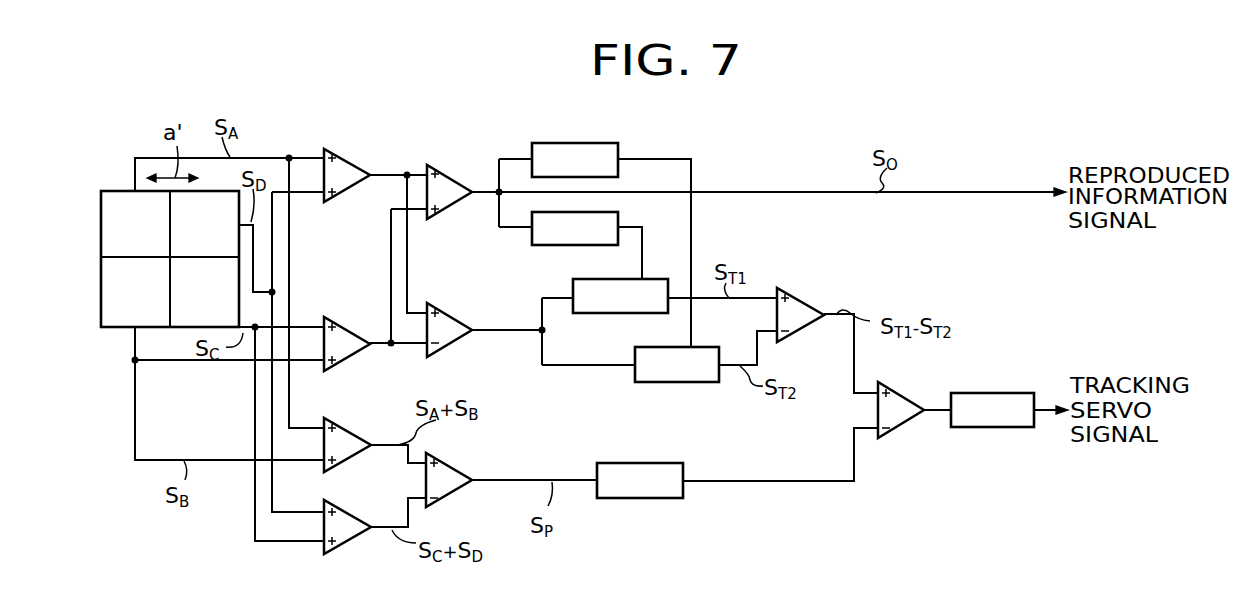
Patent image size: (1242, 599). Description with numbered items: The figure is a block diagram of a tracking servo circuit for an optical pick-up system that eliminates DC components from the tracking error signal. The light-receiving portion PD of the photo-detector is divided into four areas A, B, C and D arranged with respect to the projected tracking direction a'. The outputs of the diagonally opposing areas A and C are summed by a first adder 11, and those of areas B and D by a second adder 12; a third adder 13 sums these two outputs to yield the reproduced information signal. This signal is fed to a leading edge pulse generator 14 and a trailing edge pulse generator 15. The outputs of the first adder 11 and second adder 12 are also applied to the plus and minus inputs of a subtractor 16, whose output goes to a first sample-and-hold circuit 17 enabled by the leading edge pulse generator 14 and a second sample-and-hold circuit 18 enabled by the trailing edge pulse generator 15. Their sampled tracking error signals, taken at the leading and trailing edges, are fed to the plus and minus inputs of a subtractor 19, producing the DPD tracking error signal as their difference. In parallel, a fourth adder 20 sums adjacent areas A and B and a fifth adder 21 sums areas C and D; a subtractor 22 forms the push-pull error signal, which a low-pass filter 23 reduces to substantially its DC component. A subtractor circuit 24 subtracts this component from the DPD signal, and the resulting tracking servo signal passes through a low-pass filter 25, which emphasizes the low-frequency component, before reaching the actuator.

The light-receiving portion PD is at (122, 189).
The first adder 11 is at (355, 165).
The second adder 12 is at (353, 333).
The third adder 13 is at (448, 176).
The leading edge pulse generator 14 is at (618, 217).
The trailing edge pulse generator 15 is at (619, 150).
The subtractor 16 is at (450, 316).
The first sample-and-hold circuit 17 is at (653, 278).
The second sample-and-hold circuit 18 is at (707, 347).
The subtractor 19 is at (811, 306).
The fourth adder 20 is at (353, 434).
The fifth adder 21 is at (355, 518).
The subtractor 22 is at (462, 473).
The low-pass filter 23 is at (677, 464).
The subtractor circuit 24 is at (907, 399).
The low-pass filter 25 is at (1012, 393).